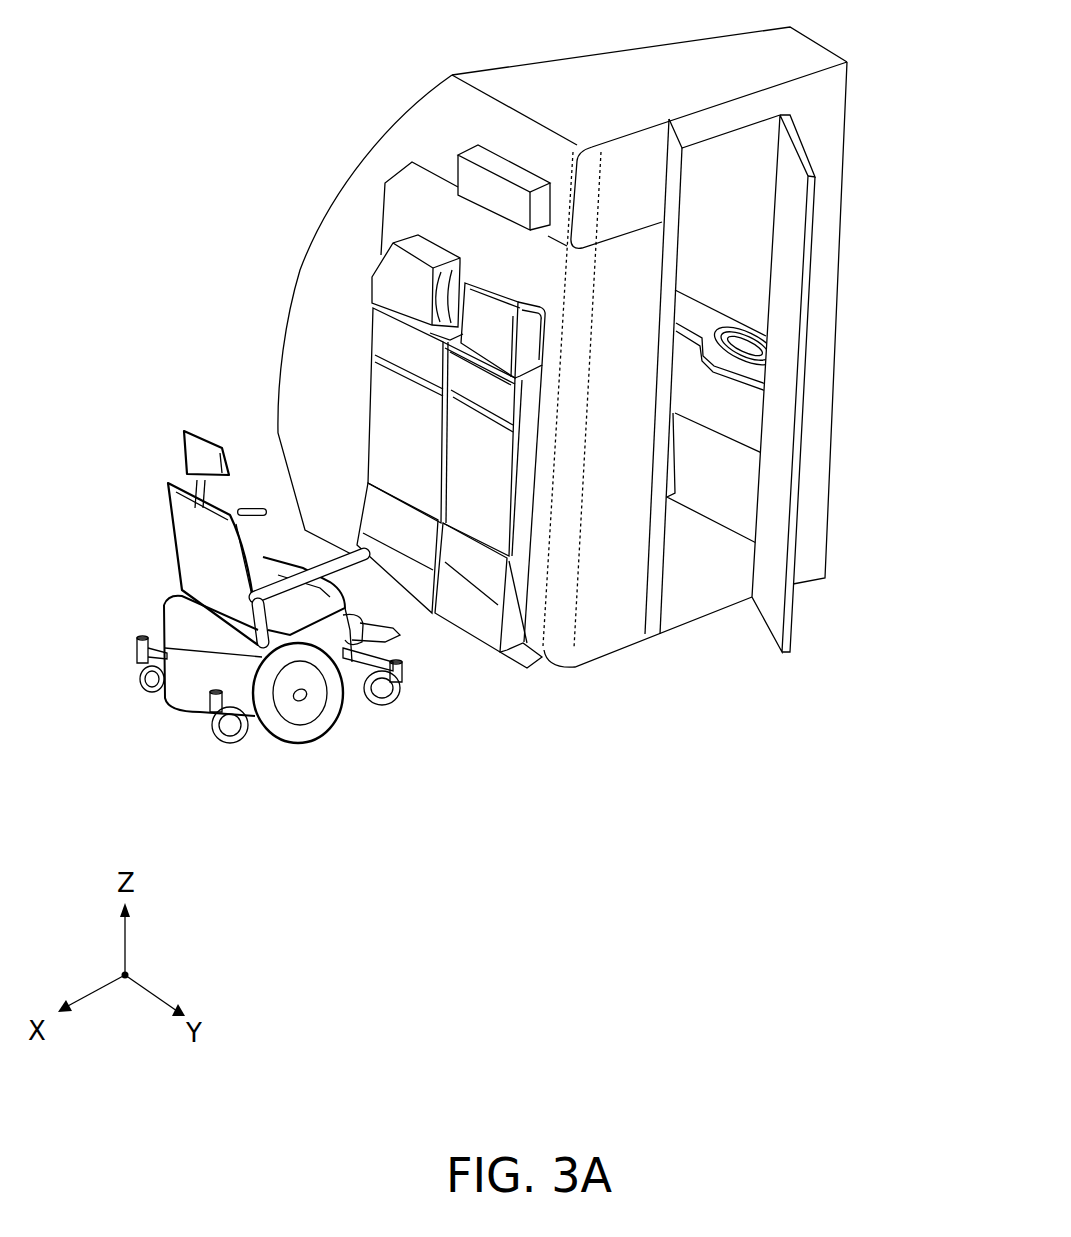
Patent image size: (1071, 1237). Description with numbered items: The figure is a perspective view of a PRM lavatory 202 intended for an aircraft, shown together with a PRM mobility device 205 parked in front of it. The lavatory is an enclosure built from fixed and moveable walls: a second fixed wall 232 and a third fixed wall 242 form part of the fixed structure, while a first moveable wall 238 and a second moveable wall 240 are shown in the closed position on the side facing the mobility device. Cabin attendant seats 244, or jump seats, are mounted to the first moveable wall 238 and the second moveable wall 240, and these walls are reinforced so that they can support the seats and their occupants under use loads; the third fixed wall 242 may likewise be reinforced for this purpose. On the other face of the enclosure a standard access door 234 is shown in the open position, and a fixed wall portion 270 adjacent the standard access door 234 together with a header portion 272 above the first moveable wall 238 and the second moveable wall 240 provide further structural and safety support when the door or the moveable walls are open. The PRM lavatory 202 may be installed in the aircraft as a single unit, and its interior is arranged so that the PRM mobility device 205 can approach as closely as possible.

The PRM lavatory 202 is at (189, 136).
The PRM mobility device 205 is at (162, 520).
The second fixed wall 232 is at (837, 316).
The standard access door 234 is at (797, 208).
The first moveable wall 238 is at (616, 596).
The second moveable wall 240 is at (400, 215).
The third fixed wall 242 is at (290, 377).
The cabin attendant seats 244 is at (415, 578).
The fixed wall portion 270 is at (827, 130).
The header portion 272 is at (450, 118).